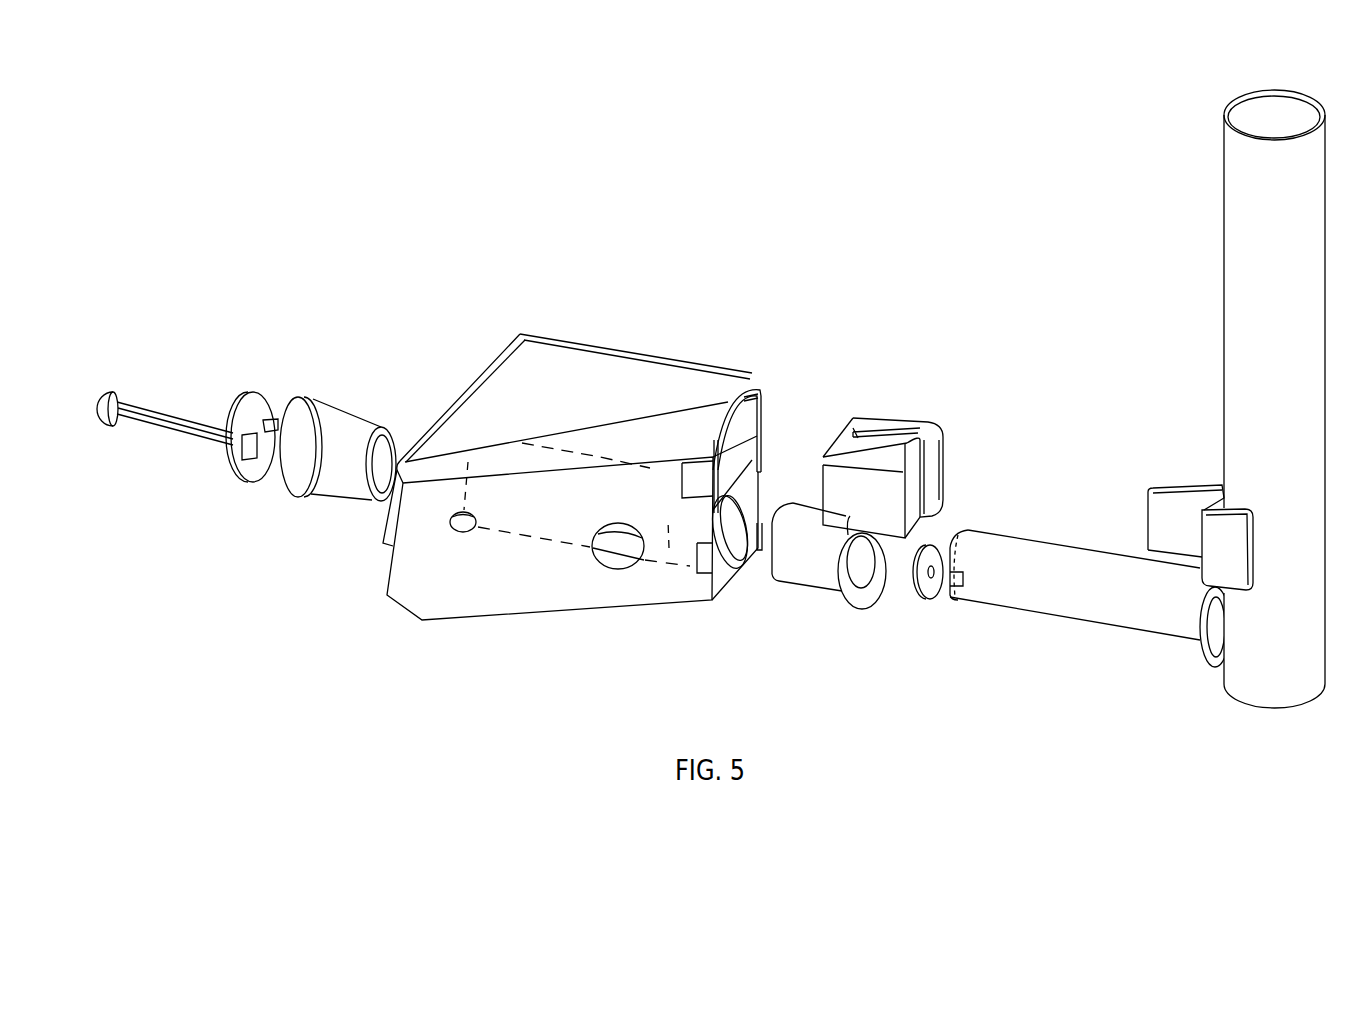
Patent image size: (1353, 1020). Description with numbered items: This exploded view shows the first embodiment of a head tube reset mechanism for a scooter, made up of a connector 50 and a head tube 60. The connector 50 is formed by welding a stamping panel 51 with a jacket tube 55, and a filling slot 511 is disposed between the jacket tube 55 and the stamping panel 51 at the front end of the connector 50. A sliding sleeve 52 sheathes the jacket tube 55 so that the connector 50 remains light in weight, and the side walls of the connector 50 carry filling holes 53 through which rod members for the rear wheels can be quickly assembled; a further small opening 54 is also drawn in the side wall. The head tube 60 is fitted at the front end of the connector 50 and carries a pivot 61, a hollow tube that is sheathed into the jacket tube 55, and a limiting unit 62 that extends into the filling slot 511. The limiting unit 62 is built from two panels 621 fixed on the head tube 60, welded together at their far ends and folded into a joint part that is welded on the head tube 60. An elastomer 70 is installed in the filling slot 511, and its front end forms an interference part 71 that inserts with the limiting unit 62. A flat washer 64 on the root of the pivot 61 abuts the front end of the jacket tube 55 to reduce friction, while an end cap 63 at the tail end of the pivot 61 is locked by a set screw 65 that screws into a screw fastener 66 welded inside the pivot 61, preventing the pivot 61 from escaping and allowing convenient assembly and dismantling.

The connector 50 is at (628, 290).
The stamping panel 51 is at (677, 386).
The filling slot 511 is at (763, 405).
The sliding sleeve 52 is at (352, 423).
The filling hole 53 is at (618, 568).
The positioning hole 54 is at (452, 530).
The jacket tube 55 is at (669, 548).
The head tube 60 is at (1245, 215).
The pivot 61 is at (1100, 592).
The limiting unit 62 is at (1168, 502).
The panel 621 is at (1236, 553).
The end cap 63 is at (252, 390).
The flat washer 64 is at (1217, 657).
The set screw 65 is at (117, 388).
The screw fastener 66 is at (932, 600).
The elastomer 70 is at (887, 422).
The interference part 71 is at (921, 462).